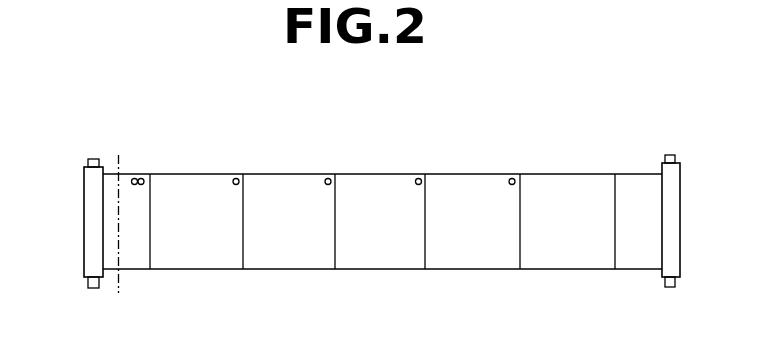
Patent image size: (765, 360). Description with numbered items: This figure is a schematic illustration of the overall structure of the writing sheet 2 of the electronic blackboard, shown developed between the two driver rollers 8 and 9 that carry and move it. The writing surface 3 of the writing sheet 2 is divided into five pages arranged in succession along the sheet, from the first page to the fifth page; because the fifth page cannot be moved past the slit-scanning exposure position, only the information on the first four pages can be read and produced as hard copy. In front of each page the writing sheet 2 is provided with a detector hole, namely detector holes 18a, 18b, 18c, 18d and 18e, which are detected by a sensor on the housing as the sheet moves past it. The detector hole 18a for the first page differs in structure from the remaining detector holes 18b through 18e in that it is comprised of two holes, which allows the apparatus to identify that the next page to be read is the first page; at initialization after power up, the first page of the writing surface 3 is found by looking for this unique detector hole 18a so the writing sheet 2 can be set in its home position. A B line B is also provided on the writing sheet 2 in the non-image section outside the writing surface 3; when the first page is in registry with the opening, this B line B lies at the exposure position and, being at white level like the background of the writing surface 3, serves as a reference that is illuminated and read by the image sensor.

The writing sheet 2 is at (299, 173).
The writing surface 3 is at (185, 181).
The driver roller 8 is at (85, 181).
The driver roller 9 is at (665, 185).
The B line B is at (116, 213).
The detector hole 18a is at (137, 178).
The detector hole 18b is at (236, 178).
The detector hole 18c is at (328, 178).
The detector hole 18d is at (418, 178).
The detector hole 18e is at (512, 178).